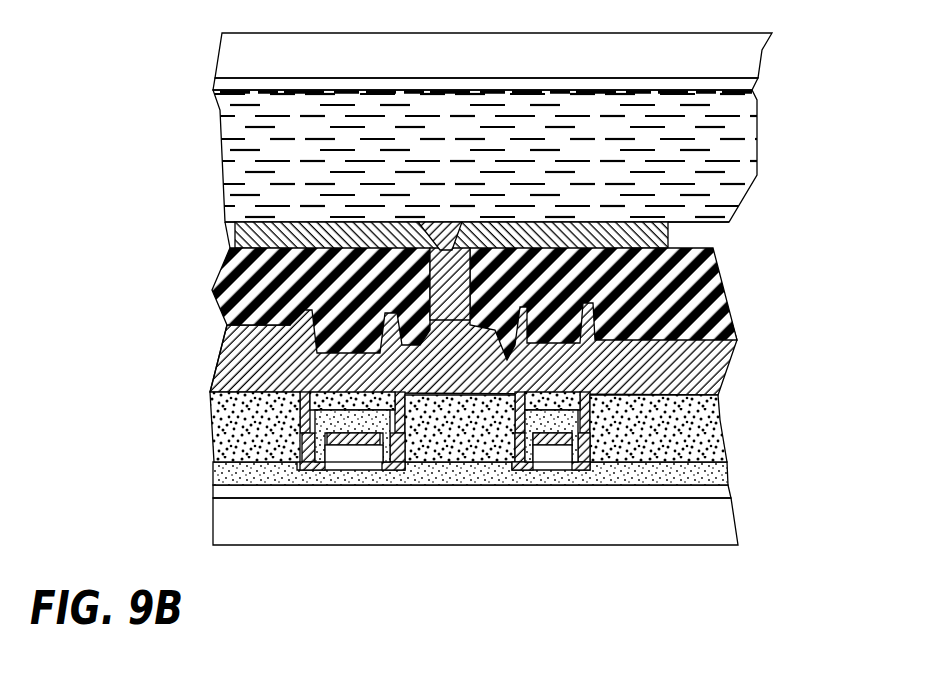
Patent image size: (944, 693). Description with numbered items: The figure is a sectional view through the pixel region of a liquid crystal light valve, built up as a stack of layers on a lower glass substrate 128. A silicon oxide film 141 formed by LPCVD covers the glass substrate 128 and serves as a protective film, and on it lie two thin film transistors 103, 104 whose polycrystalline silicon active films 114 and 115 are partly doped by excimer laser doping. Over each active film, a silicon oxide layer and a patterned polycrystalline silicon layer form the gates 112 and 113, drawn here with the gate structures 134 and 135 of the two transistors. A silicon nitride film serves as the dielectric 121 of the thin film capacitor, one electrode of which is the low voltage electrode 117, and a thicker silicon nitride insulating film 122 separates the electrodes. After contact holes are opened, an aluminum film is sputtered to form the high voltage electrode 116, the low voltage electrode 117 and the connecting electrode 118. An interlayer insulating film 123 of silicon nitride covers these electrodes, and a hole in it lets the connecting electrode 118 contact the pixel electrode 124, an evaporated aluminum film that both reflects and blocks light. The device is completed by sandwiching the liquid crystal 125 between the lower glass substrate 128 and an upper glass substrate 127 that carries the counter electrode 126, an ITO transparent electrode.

The first thin film transistor 103 is at (420, 630).
The second thin film transistor 104 is at (602, 630).
The gate 112 is at (322, 467).
The gate 113 is at (550, 452).
The active film 114 is at (367, 475).
The active film 115 is at (527, 455).
The high voltage electrode 116 is at (222, 365).
The low voltage electrode 117 is at (707, 388).
The connecting electrode 118 is at (435, 385).
The dielectric 121 is at (710, 472).
The insulating film 122 is at (717, 432).
The interlayer insulating film 123 is at (722, 296).
The pixel electrode 124 is at (703, 233).
The liquid crystal 125 is at (713, 168).
The counter electrode 126 is at (740, 88).
The glass substrate 127 is at (745, 60).
The glass substrate 128 is at (697, 517).
The gate electrode 134 is at (352, 453).
The gate insulating film 135 is at (560, 453).
The silicon oxide film 141 is at (717, 492).